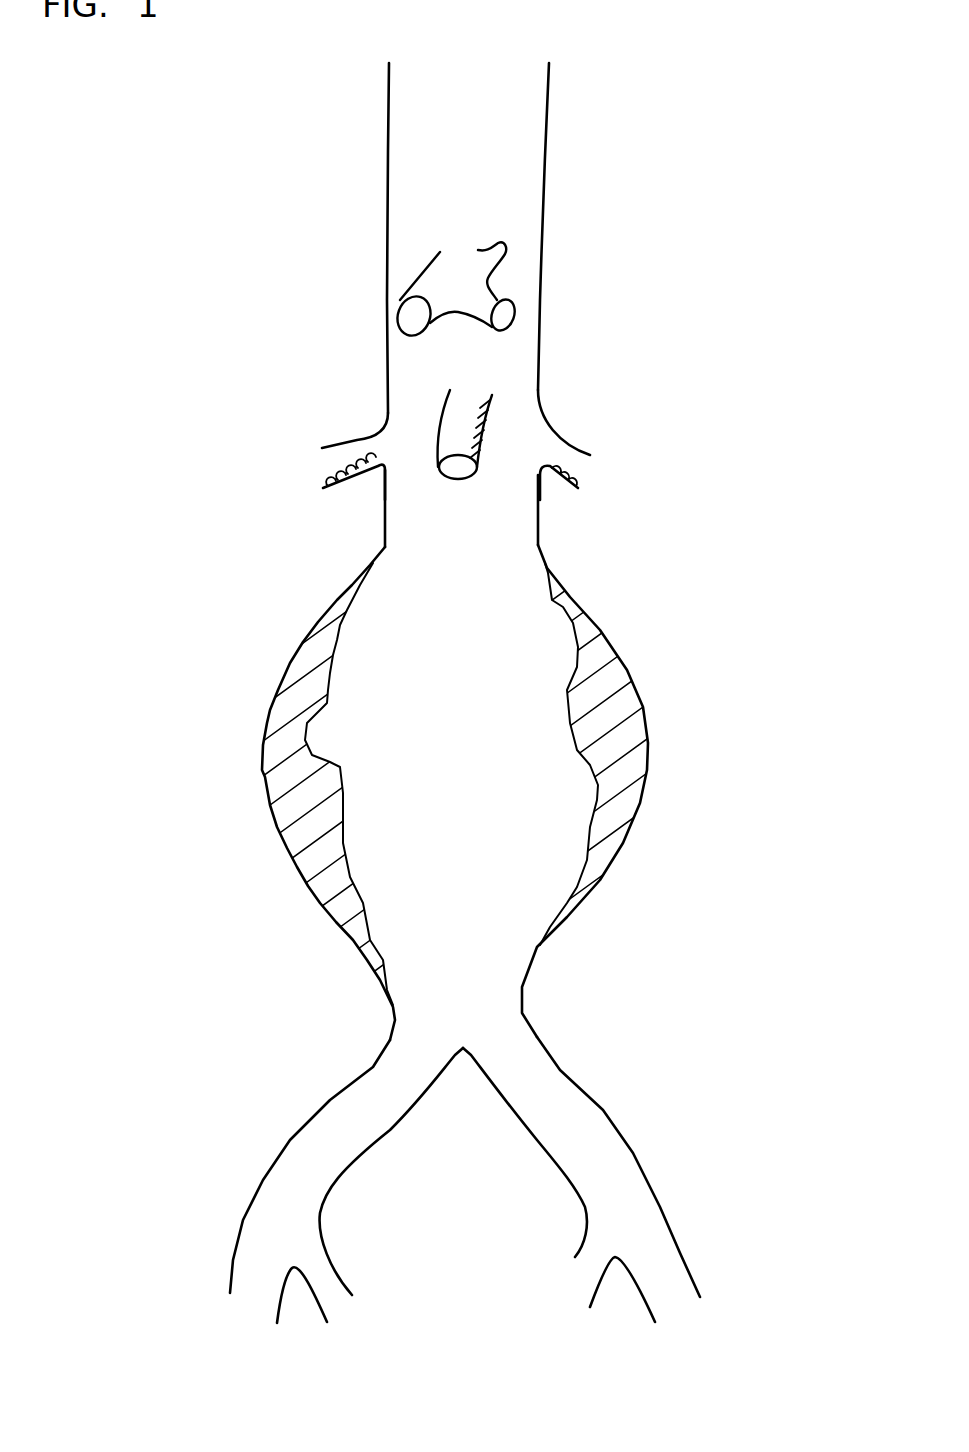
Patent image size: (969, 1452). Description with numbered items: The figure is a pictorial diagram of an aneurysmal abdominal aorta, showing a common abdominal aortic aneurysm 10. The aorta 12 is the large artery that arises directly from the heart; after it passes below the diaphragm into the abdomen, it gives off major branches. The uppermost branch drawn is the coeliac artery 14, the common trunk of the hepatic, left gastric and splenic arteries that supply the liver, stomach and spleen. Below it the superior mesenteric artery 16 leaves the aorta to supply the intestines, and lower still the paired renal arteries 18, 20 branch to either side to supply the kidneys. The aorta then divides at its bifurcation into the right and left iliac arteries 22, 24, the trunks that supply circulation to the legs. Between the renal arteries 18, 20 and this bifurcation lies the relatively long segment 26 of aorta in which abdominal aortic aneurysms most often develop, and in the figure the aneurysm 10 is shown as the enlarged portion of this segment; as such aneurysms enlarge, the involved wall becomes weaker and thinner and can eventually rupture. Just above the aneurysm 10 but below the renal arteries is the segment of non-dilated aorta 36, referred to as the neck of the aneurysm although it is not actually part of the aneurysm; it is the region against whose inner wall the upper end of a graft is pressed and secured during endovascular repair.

The abdominal aortic aneurysm 10 is at (637, 805).
The aorta 12 is at (604, 208).
The coeliac artery 14 is at (448, 287).
The superior mesenteric artery 16 is at (472, 418).
The renal artery 18 is at (570, 463).
The renal artery 20 is at (342, 453).
The right iliac artery 22 is at (603, 1110).
The left iliac artery 24 is at (280, 1155).
The segment of aorta 26 is at (222, 766).
The neck of the aneurysm 36 is at (538, 528).